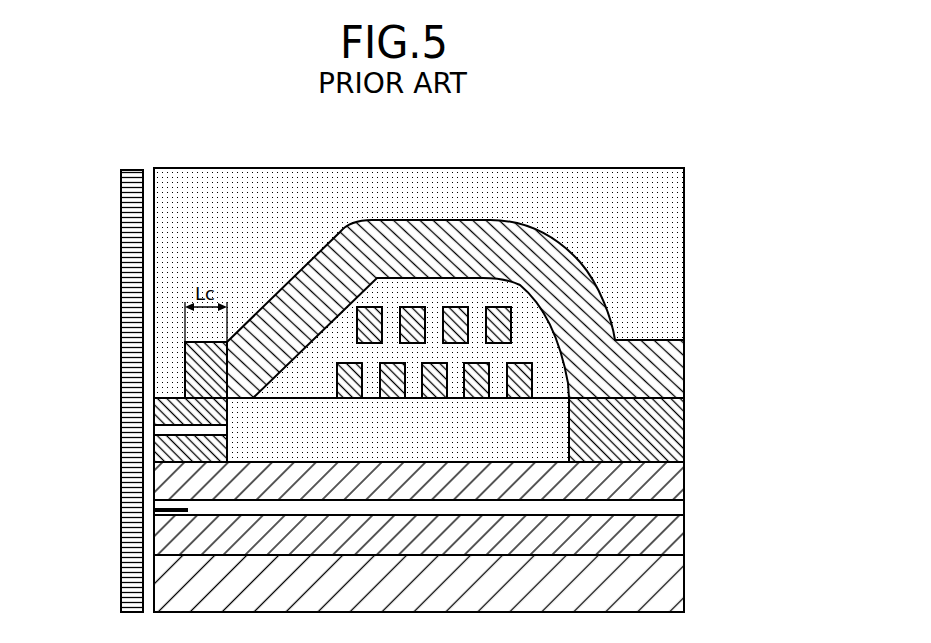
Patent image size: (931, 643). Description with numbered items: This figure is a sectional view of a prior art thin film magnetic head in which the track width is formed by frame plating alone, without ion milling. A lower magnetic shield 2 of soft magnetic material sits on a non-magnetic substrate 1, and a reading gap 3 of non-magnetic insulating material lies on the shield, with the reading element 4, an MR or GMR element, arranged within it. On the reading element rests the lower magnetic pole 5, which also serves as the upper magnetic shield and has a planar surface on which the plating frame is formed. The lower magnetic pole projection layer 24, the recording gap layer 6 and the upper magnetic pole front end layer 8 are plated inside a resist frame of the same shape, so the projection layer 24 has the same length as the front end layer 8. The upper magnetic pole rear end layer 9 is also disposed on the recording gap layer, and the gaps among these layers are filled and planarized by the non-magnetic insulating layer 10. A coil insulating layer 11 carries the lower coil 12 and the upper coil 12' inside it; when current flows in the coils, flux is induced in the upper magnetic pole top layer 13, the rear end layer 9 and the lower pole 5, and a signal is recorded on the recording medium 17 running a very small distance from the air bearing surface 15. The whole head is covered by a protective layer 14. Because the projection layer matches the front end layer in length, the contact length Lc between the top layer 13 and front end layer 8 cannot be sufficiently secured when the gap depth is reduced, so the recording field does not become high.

The substrate 1 is at (660, 573).
The lower magnetic shield 2 is at (660, 530).
The reading gap 3 is at (657, 507).
The reading element 4 is at (152, 509).
The lower magnetic pole 5 is at (660, 487).
The recording gap layer 6 is at (173, 430).
The upper magnetic pole front end layer 8 is at (178, 415).
The upper magnetic pole rear end layer 9 is at (655, 422).
The non-magnetic insulating layer 10 is at (543, 417).
The coil insulating layer 11 is at (547, 350).
The lower coil 12 is at (506, 236).
The upper coil 12' is at (467, 262).
The upper magnetic pole top layer 13 is at (565, 283).
The protective layer 14 is at (237, 228).
The air bearing surface 15 is at (153, 285).
The recording medium 17 is at (122, 233).
The lower magnetic pole projection layer 24 is at (177, 448).